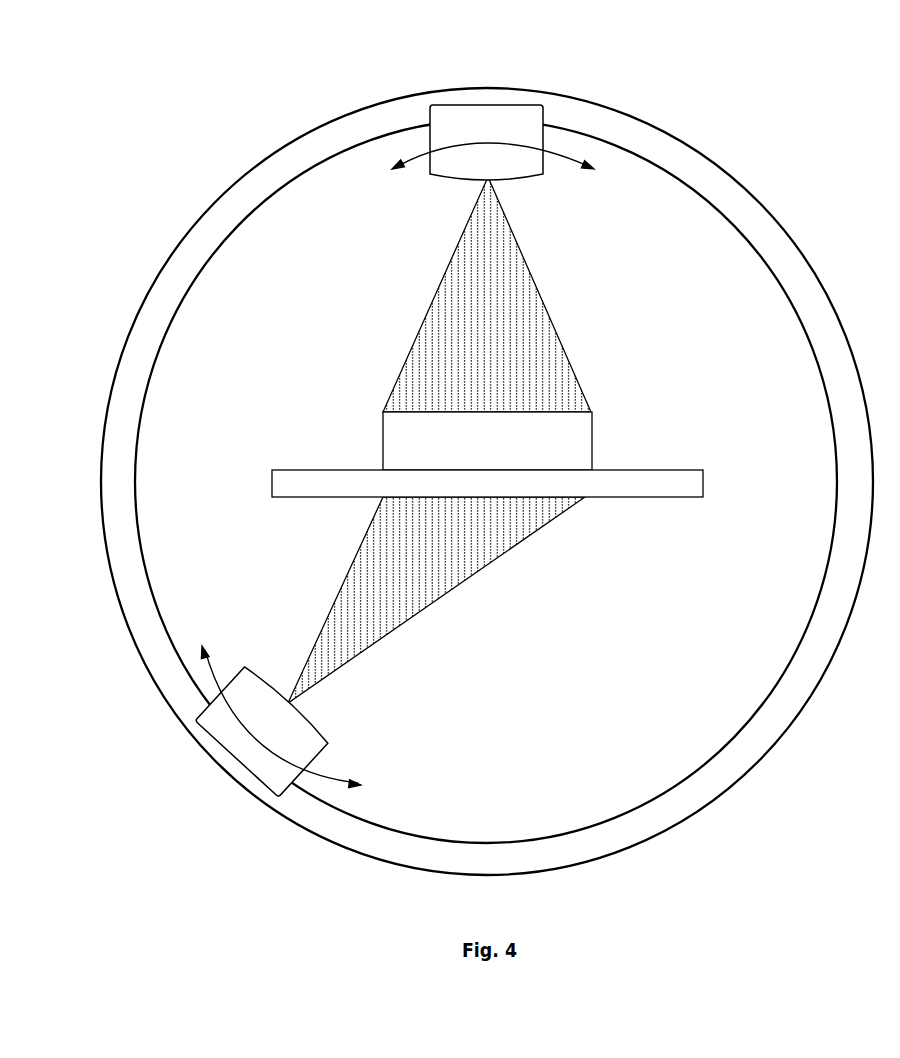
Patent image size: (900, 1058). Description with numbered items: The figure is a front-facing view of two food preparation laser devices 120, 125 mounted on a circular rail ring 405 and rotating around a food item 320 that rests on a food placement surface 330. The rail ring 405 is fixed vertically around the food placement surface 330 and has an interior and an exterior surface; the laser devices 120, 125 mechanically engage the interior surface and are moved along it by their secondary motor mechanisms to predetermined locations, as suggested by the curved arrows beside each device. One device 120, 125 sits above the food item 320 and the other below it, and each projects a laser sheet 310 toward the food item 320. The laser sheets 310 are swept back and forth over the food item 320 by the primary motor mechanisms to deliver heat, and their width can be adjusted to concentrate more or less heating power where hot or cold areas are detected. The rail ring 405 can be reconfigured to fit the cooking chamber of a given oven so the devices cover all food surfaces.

The food preparation laser device 120 is at (347, 418).
The food preparation laser device 125 is at (509, 105).
The laser sheet 310 is at (431, 303).
The food item 320 is at (592, 447).
The food placement surface 330 is at (659, 497).
The rail ring 405 is at (822, 283).